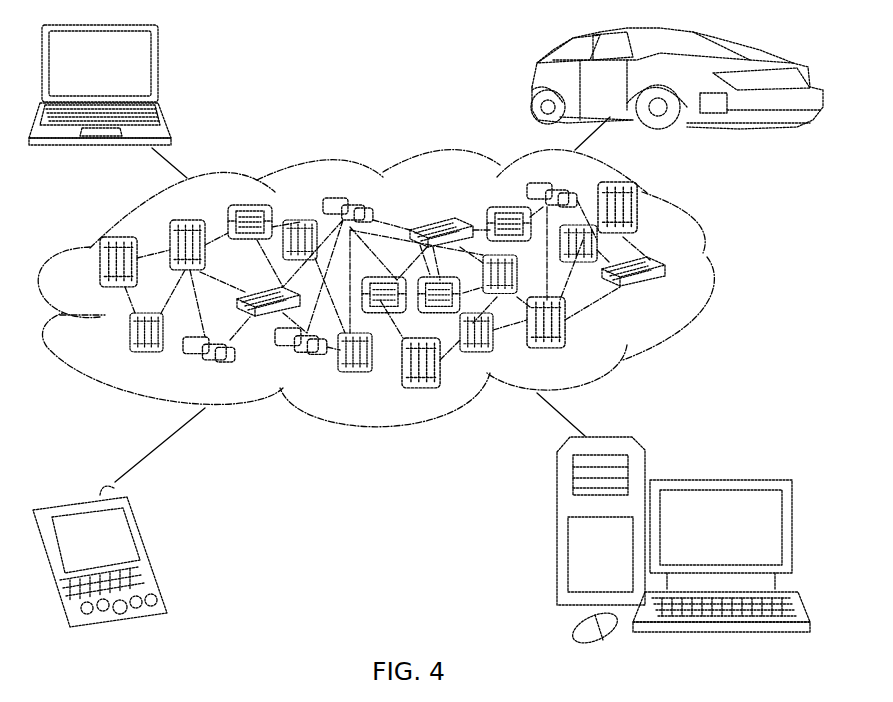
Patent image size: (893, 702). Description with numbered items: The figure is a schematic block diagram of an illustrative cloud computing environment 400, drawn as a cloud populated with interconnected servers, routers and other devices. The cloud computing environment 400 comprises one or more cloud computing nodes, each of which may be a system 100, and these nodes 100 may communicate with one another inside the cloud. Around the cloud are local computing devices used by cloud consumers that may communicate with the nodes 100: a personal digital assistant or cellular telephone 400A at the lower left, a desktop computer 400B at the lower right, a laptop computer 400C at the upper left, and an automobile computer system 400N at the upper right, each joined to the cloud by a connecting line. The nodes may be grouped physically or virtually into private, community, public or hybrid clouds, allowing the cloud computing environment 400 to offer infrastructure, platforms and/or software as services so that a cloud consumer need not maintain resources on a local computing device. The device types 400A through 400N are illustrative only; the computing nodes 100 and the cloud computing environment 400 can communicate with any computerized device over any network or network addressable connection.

The cloud computing environment 400 is at (720, 272).
The system 100 is at (680, 296).
The personal digital assistant or cellular telephone 400A is at (153, 547).
The desktop computer 400B is at (718, 478).
The laptop computer 400C is at (160, 70).
The automobile computer system 400N is at (530, 80).